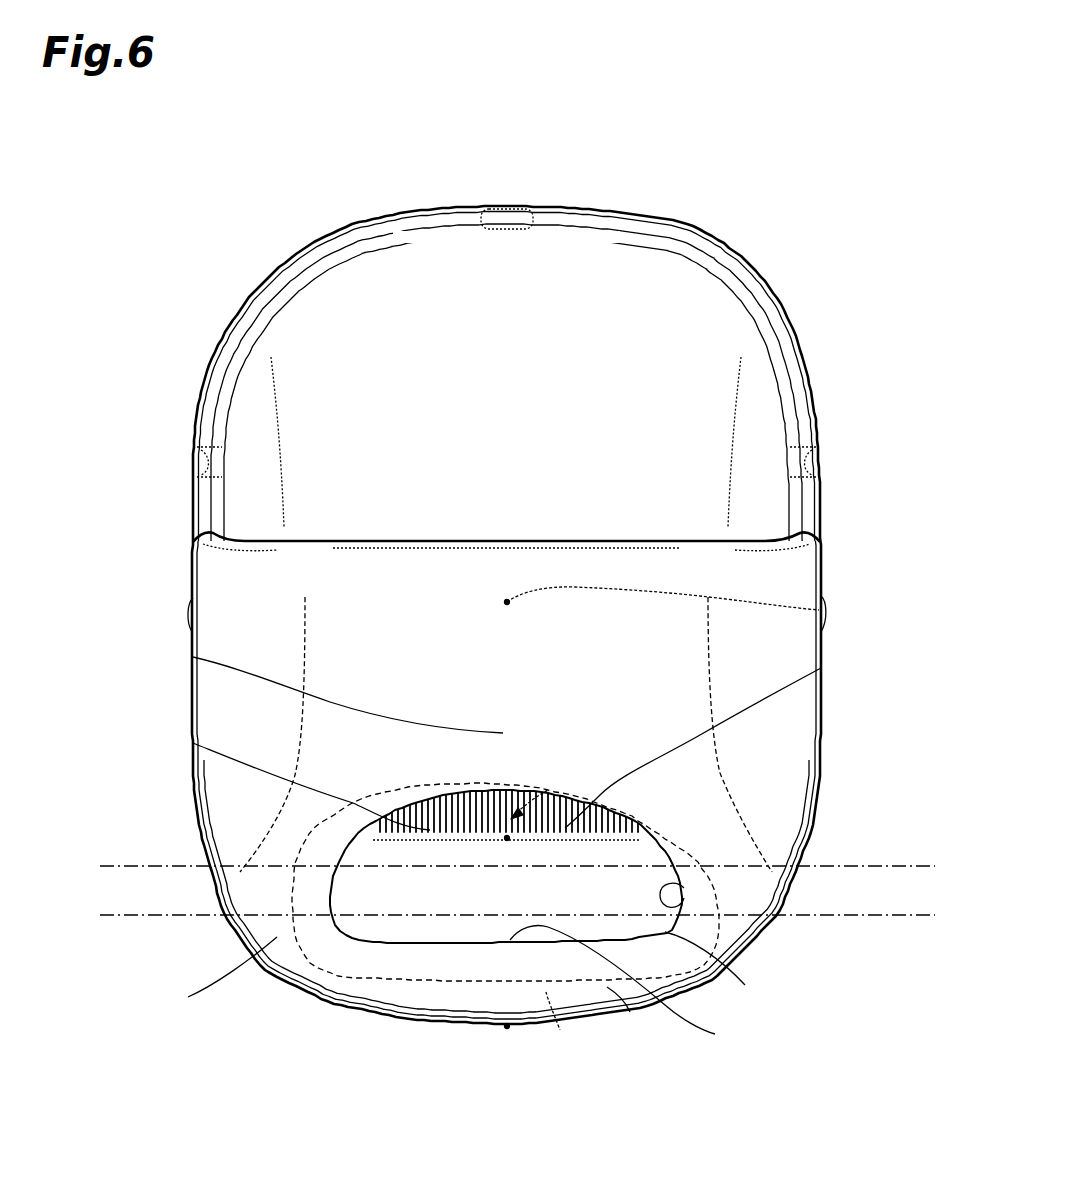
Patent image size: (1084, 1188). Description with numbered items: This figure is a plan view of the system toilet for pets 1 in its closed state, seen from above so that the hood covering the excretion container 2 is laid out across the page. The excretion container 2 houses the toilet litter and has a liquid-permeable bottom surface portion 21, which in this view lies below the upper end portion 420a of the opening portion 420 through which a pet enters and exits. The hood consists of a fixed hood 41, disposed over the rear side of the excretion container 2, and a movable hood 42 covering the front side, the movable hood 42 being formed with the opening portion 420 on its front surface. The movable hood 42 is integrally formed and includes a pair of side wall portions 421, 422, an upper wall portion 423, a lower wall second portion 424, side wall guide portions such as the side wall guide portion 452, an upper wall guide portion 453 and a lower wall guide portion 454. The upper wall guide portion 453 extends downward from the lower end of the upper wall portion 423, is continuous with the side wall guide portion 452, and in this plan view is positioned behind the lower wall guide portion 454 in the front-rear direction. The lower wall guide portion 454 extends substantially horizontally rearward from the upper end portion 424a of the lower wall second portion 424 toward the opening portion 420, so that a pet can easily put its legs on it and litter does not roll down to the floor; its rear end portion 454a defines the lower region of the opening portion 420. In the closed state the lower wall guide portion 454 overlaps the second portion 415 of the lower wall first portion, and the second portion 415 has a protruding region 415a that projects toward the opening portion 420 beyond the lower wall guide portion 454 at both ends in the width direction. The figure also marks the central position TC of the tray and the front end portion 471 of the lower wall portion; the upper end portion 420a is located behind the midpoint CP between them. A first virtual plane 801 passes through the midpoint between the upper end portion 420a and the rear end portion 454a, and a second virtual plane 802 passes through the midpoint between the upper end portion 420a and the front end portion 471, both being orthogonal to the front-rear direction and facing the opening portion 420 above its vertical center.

The system toilet for pets 1 is at (191, 168).
The fixed hood 41 is at (320, 327).
The movable hood 42 is at (237, 599).
The upper wall portion 423 is at (193, 657).
The upper wall guide portion 453 is at (193, 743).
The side wall portion 421 is at (215, 819).
The central position of the tray TC is at (821, 609).
The upper end portion of the opening portion 420a is at (822, 668).
The side wall portion 422 is at (805, 727).
The midpoint CP is at (507, 838).
The first virtual plane 801 is at (903, 866).
The second virtual plane 802 is at (833, 916).
The opening portion 420 is at (458, 896).
The side wall guide portion 452 is at (684, 900).
The upper end portion of the lower wall second portion 424a is at (505, 961).
The lower wall second portion 424 is at (455, 982).
The liquid-permeable bottom surface portion 21 is at (480, 962).
The excretion container 2 is at (445, 830).
The front end portion of the lower wall portion 471 is at (507, 1028).
The rear end portion of the lower wall guide portion 454a is at (715, 1034).
The lower wall guide portion 454 is at (630, 1012).
The protruding region 415a is at (745, 985).
The second portion 415 is at (560, 1030).